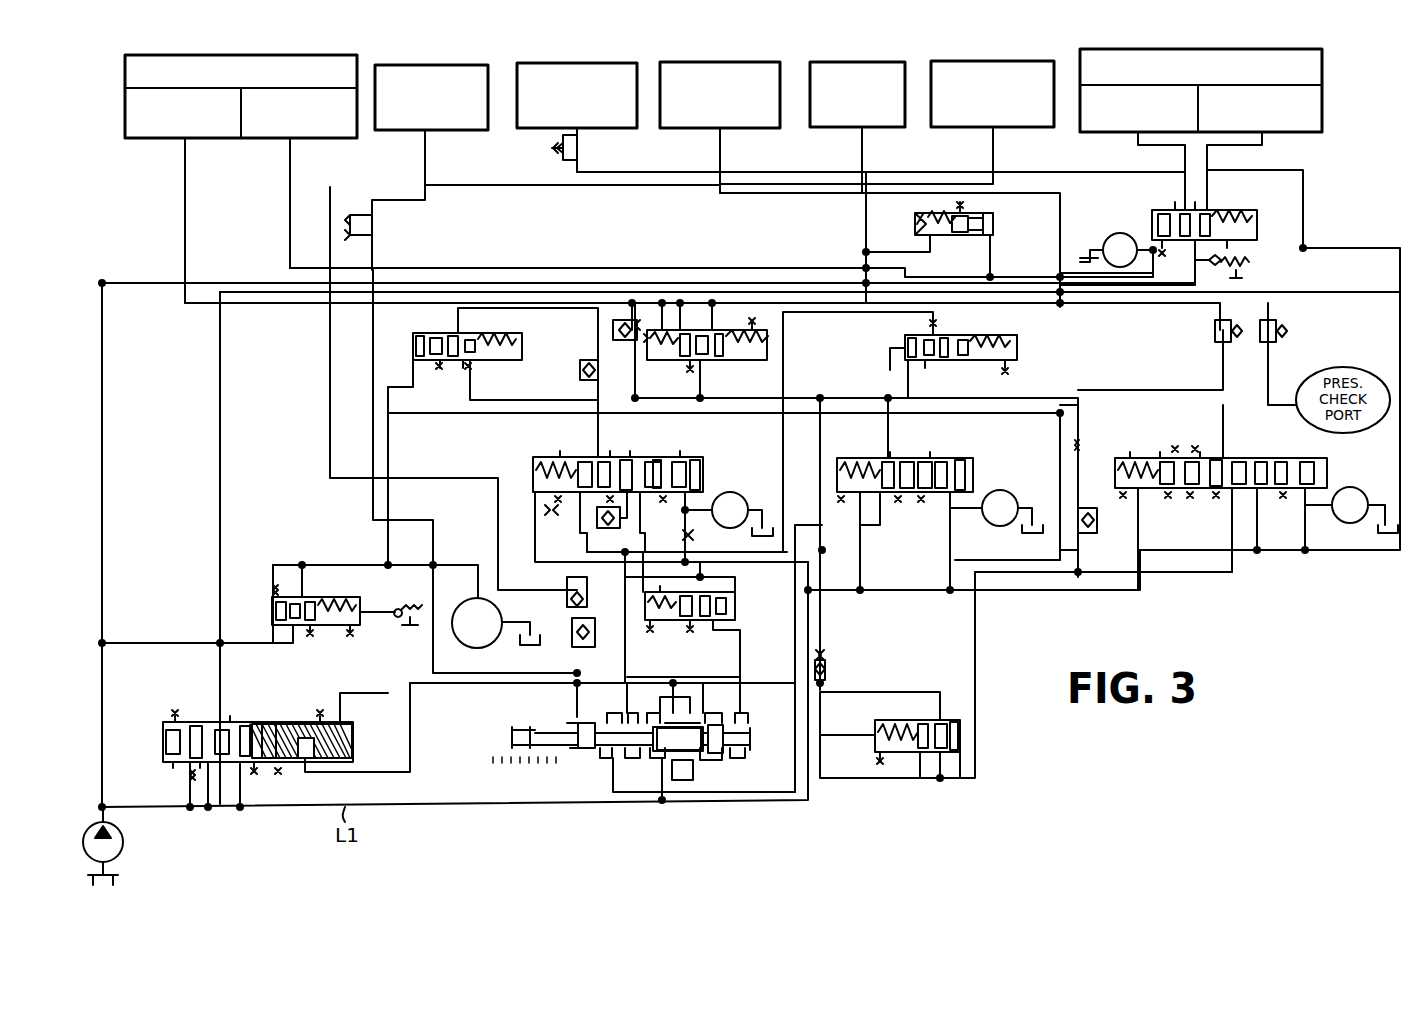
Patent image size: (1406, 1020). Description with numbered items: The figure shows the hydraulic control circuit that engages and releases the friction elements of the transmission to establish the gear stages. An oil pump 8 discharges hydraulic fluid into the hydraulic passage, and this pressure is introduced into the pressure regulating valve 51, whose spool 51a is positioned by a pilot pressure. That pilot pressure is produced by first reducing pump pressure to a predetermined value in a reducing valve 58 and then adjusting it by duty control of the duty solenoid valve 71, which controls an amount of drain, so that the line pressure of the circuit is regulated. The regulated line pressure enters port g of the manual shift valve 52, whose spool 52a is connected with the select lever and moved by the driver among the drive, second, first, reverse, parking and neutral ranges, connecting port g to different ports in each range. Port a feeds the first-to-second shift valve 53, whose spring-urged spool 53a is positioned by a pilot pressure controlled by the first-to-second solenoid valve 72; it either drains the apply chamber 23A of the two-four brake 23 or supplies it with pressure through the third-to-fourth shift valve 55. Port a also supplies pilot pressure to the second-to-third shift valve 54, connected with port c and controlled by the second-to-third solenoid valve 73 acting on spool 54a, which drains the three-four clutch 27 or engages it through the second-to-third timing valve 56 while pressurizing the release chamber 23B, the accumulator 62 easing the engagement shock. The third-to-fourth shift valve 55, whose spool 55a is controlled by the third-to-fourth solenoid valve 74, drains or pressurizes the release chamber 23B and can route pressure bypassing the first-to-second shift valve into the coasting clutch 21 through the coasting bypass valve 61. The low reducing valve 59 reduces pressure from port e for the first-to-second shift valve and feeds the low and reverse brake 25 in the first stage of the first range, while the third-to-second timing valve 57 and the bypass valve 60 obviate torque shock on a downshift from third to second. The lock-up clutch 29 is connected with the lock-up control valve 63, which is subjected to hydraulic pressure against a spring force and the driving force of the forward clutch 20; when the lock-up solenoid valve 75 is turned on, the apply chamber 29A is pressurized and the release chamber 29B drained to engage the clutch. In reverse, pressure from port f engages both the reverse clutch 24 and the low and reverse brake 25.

The oil pump 8 is at (124, 838).
The forward clutch 20 is at (572, 63).
The coasting clutch 21 is at (714, 62).
The 2-4 brake 23 is at (237, 55).
The apply chamber 23A is at (253, 138).
The release chamber 23B is at (145, 138).
The reverse clutch 24 is at (425, 65).
The low & reverse brake 25 is at (992, 61).
The 3-4 clutch 27 is at (850, 62).
The lock-up clutch 29 is at (1200, 49).
The apply chamber 29A is at (1312, 132).
The release chamber 29B is at (1095, 132).
The pressure regulating valve 51 is at (262, 720).
The spool 51a is at (300, 760).
The manual shift valve 52 is at (514, 730).
The spool 52a is at (688, 747).
The 1-2 shift valve 53 is at (702, 457).
The spool 53a is at (647, 458).
The 2-3 shift valve 54 is at (973, 464).
The spool 54a is at (928, 456).
The 3-4 shift valve 55 is at (1329, 470).
The spool 55a is at (1244, 460).
The 2-3 timing valve 56 is at (494, 360).
The 3-2 timing valve 57 is at (870, 733).
The reducing valve 58 is at (332, 628).
The low reducing valve 59 is at (670, 620).
The bypass valve 60 is at (734, 360).
The coasting bypass valve 61 is at (1018, 346).
The accumulator 62 is at (993, 219).
The lock-up control valve 63 is at (1246, 212).
The duty solenoid valve 71 is at (484, 646).
The 1-2 solenoid valve 72 is at (728, 500).
The 2-3 solenoid valve 73 is at (1008, 497).
The 3-4 solenoid valve 74 is at (1360, 500).
The lock-up solenoid valve 75 is at (1112, 233).